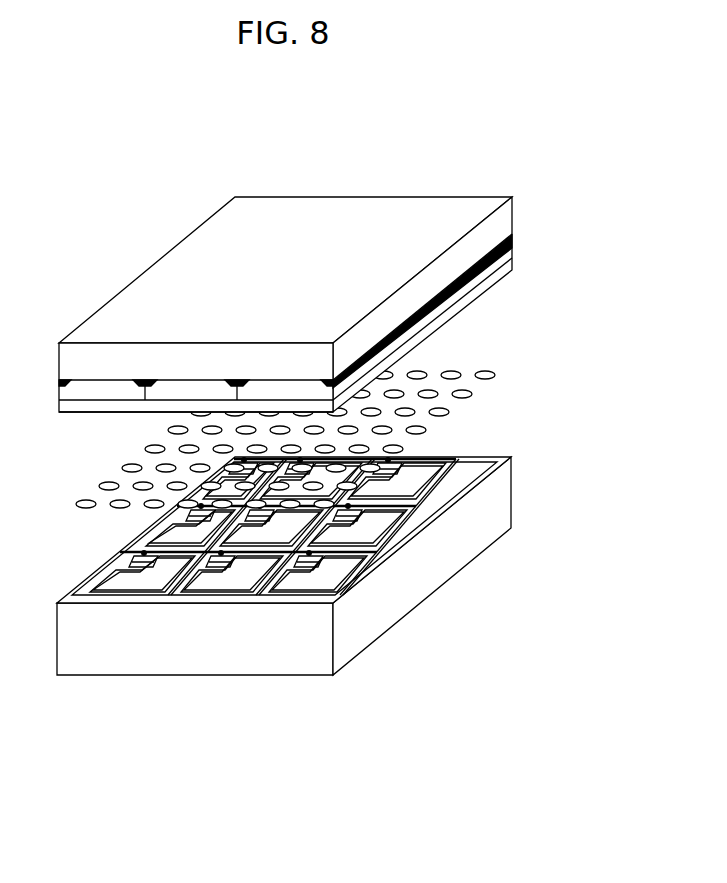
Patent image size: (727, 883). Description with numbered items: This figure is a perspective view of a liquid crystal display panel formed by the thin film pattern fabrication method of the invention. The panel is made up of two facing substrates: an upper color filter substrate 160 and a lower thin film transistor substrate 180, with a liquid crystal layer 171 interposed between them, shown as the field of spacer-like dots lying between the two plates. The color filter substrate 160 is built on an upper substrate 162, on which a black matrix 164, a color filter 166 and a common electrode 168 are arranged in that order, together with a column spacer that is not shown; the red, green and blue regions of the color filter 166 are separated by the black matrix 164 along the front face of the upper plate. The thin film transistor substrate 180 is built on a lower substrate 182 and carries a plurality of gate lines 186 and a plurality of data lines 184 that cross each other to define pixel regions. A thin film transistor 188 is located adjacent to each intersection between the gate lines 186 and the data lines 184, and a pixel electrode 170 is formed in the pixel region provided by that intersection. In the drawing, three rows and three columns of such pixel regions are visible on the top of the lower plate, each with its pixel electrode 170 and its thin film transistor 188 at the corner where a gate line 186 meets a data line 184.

The color filter substrate 160 is at (320, 280).
The upper substrate 162 is at (512, 221).
The black matrix 164 is at (470, 273).
The color filter 166 is at (512, 248).
The common electrode 168 is at (512, 265).
The pixel electrode 170 is at (355, 565).
The liquid crystal layer 171 is at (486, 372).
The thin film transistor substrate 180 is at (314, 595).
The lower substrate 182 is at (512, 492).
The data lines 184 is at (169, 598).
The gate lines 186 is at (287, 598).
The thin film transistor 188 is at (323, 562).